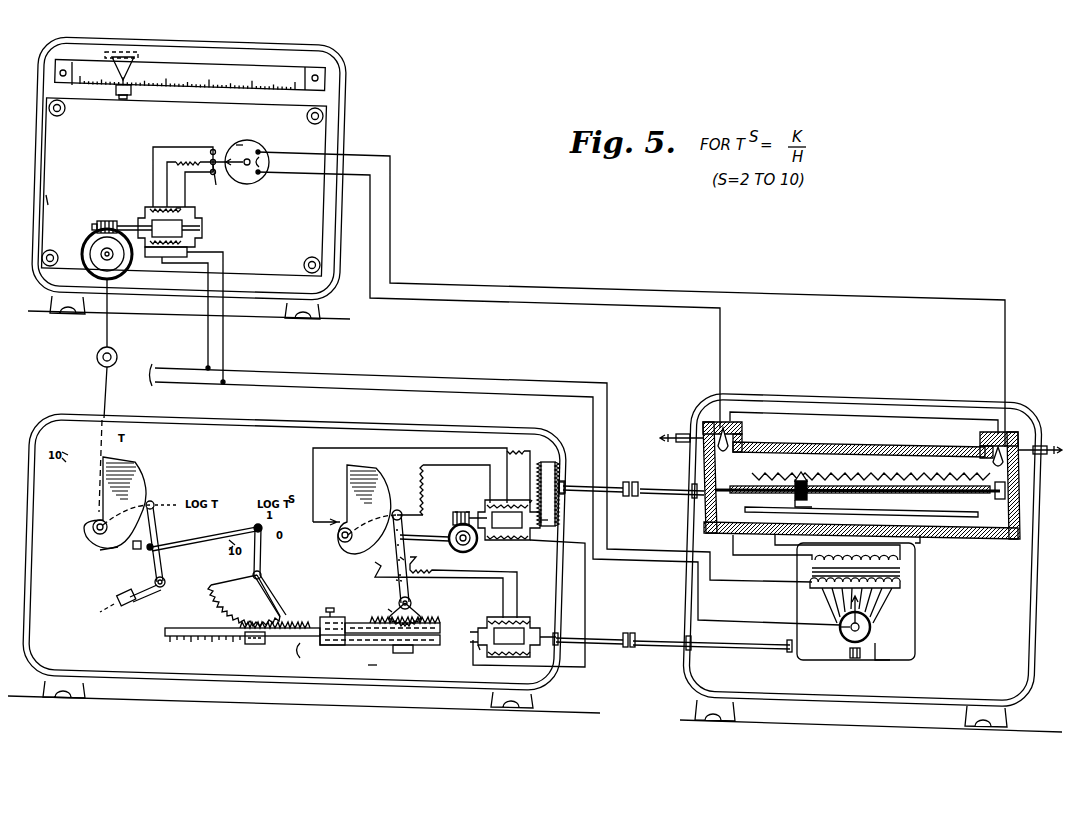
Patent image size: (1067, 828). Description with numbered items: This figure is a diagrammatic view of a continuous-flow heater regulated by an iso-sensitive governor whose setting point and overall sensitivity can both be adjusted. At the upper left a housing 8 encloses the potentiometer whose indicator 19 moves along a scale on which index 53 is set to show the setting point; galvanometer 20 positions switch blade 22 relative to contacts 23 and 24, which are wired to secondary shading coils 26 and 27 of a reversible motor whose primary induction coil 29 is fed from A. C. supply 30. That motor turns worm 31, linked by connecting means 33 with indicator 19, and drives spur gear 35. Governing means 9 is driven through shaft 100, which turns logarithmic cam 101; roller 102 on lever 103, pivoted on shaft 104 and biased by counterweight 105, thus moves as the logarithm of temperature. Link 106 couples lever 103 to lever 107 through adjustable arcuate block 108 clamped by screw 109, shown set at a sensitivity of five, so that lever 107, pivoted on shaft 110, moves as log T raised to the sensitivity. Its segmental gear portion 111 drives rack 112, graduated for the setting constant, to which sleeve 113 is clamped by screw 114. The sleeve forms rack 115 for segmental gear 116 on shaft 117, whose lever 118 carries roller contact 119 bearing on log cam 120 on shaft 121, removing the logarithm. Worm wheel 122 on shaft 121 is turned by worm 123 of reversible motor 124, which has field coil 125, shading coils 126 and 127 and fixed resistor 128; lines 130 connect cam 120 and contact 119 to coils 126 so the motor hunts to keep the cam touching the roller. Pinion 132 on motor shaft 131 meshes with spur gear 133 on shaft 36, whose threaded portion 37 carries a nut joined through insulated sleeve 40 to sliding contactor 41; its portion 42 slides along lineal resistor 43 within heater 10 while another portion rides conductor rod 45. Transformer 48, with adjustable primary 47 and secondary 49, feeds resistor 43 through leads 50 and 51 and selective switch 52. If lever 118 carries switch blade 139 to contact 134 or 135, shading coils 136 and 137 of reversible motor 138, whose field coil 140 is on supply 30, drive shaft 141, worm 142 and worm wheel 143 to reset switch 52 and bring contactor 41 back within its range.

The temperature recorder housing 8 is at (35, 147).
The governing means 9 is at (28, 480).
The heater 10 is at (836, 397).
The indicator 19 is at (122, 100).
The galvanometer 20 is at (253, 184).
The contact switch blade 22 is at (233, 147).
The contact 23 is at (212, 152).
The contact 24 is at (214, 175).
The secondary shading coil 26 is at (152, 207).
The secondary shading coil 27 is at (178, 208).
The primary induction coil 29 is at (165, 247).
The A. C. supply 30 is at (484, 438).
The single thread worm 31 is at (107, 220).
The connecting means 33 is at (48, 198).
The spur gear 35 is at (86, 246).
The shaft 36 is at (616, 492).
The threaded portion 37 is at (884, 490).
The insulated sleeve 40 is at (809, 496).
The sliding contactor 41 is at (765, 513).
The contacting portion 42 is at (807, 486).
The lineal resistor 43 is at (858, 448).
The conductor rod 45 is at (972, 525).
The adjustable primary 47 is at (900, 586).
The manually adjustable transformer 48 is at (905, 574).
The secondary 49 is at (905, 558).
The lead 50 is at (742, 558).
The lead line 51 is at (772, 558).
The selective switch 52 is at (871, 629).
The index 53 is at (128, 60).
The shaft 100 is at (106, 382).
The logarithmic cam 101 is at (140, 470).
The roller 102 is at (150, 501).
The lever 103 is at (154, 562).
The shaft 104 is at (166, 582).
The counterweight 105 is at (118, 595).
The link 106 is at (198, 538).
The lever 107 is at (262, 550).
The adjustable arcuate block 108 is at (103, 550).
The clamping screw 109 is at (138, 549).
The shaft 110 is at (263, 575).
The segmental gear portion 111 is at (212, 594).
The rack 112 is at (206, 622).
The sleeve 113 is at (348, 644).
The clamping screw 114 is at (330, 600).
The rack 115 is at (428, 617).
The segmental gear 116 is at (392, 609).
The shaft 117 is at (411, 604).
The lever 118 is at (399, 587).
The roller contact 119 is at (400, 512).
The log cam 120 is at (380, 466).
The shaft 121 is at (340, 540).
The worm wheel 122 is at (449, 536).
The worm 123 is at (457, 512).
The reversible motor 124 is at (476, 507).
The field coil 125 is at (503, 540).
The shading coils 126 is at (500, 503).
The shading coils 127 is at (520, 500).
The fixed resistor 128 is at (520, 452).
The lines 130 is at (313, 463).
The shaft 131 is at (453, 518).
The pinion gear 132 is at (560, 543).
The spur gear 133 is at (552, 462).
The contact 134 is at (375, 563).
The contact 135 is at (416, 557).
The shading coil 136 is at (496, 620).
The shading coil 137 is at (520, 618).
The reversible motor 138 is at (486, 648).
The switch blade 139 is at (401, 558).
The field coil 140 is at (505, 655).
The shaft 141 is at (612, 648).
The worm 142 is at (855, 659).
The worm wheel 143 is at (842, 630).